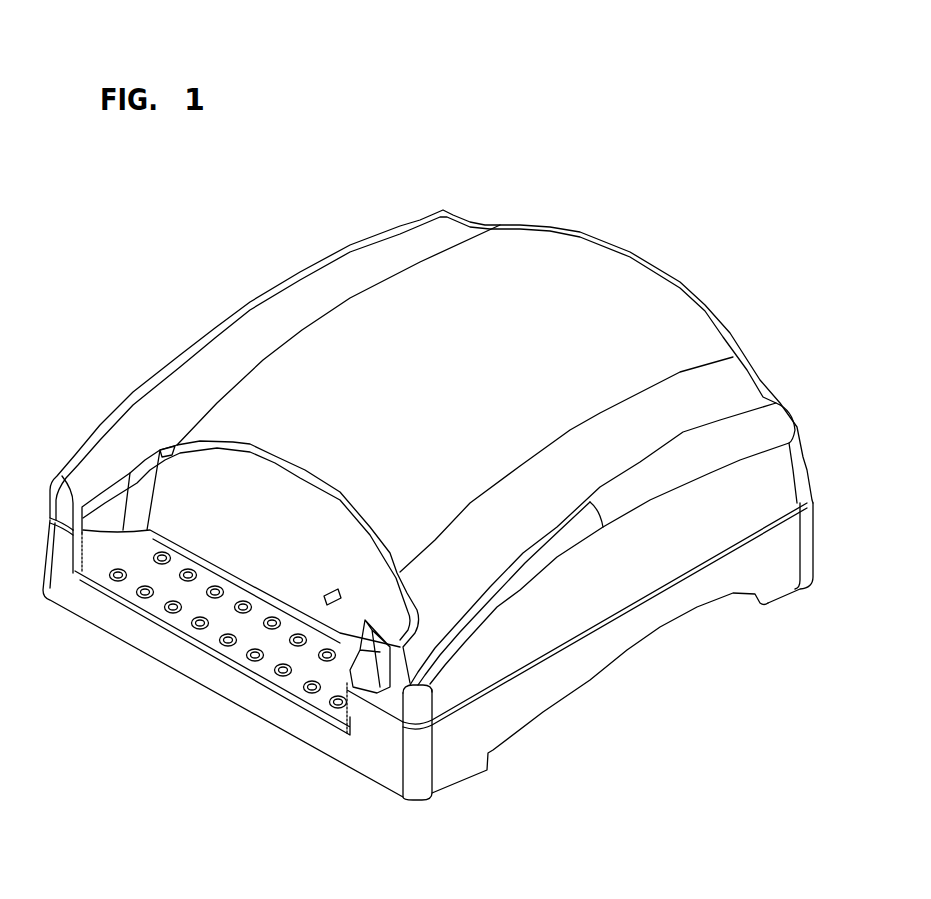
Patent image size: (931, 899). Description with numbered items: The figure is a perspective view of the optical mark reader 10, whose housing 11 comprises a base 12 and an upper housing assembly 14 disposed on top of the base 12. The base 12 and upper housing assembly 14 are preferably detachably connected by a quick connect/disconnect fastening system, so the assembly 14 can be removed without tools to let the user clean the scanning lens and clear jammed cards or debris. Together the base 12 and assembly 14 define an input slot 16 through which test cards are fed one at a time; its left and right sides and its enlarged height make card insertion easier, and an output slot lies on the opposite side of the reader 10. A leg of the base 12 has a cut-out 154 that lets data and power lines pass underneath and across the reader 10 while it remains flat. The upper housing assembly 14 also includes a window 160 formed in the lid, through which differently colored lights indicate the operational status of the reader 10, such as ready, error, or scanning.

The reader 10 is at (475, 116).
The housing 11 is at (167, 345).
The base 12 is at (372, 762).
The upper housing assembly 14 is at (674, 550).
The input slot 16 is at (244, 638).
The cut-out 154 is at (600, 668).
The window 160 is at (334, 588).